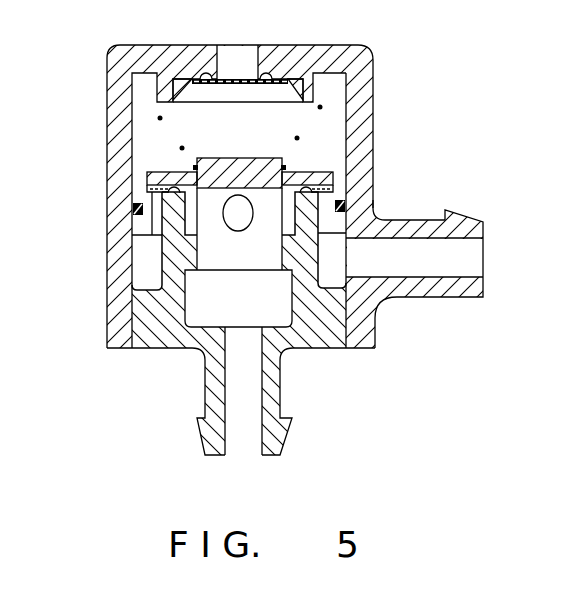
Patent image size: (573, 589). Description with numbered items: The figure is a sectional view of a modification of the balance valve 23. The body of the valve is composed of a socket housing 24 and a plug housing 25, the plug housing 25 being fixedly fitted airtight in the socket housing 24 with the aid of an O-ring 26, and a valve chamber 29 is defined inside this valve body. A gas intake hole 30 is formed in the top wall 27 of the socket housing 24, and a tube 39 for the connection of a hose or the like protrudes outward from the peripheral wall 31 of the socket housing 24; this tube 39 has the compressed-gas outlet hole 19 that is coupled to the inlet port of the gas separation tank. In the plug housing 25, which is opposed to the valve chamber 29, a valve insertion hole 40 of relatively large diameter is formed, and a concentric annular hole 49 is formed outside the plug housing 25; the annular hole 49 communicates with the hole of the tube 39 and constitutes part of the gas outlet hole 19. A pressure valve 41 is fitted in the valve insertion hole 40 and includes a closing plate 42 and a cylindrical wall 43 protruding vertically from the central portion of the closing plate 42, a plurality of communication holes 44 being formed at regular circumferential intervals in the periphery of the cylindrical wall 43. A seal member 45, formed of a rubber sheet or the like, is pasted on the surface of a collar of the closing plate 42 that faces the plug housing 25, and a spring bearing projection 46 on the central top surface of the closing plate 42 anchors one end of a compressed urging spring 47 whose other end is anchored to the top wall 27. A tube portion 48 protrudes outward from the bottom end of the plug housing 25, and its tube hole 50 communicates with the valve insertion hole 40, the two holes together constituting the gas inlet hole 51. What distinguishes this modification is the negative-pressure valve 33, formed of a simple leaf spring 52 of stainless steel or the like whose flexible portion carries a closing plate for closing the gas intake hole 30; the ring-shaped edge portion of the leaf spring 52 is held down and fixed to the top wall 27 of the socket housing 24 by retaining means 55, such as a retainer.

The compressed-gas outlet hole 19 is at (457, 272).
The balance valve 23 is at (386, 74).
The socket housing 24 is at (365, 145).
The plug housing 25 is at (149, 350).
The O-ring 26 is at (133, 208).
The top wall 27 is at (342, 50).
The valve chamber 29 is at (137, 140).
The gas intake hole 30 is at (246, 56).
The peripheral wall 31 is at (360, 176).
The negative-pressure valve 33 is at (246, 86).
The tube 39 is at (398, 298).
The valve insertion hole 40 is at (190, 299).
The pressure valve 41 is at (250, 156).
The closing plate 42 is at (312, 172).
The cylindrical wall 43 is at (202, 258).
The communication holes 44 is at (247, 218).
The seal member 45 is at (147, 190).
The spring bearing projection 46 is at (200, 158).
The compressed urging spring 47 is at (322, 107).
The tube portion 48 is at (280, 378).
The annular hole 49 is at (152, 222).
The tube hole 50 is at (245, 415).
The gas inlet hole 51 is at (233, 378).
The leaf spring 52 is at (216, 84).
The retaining means 55 is at (293, 86).